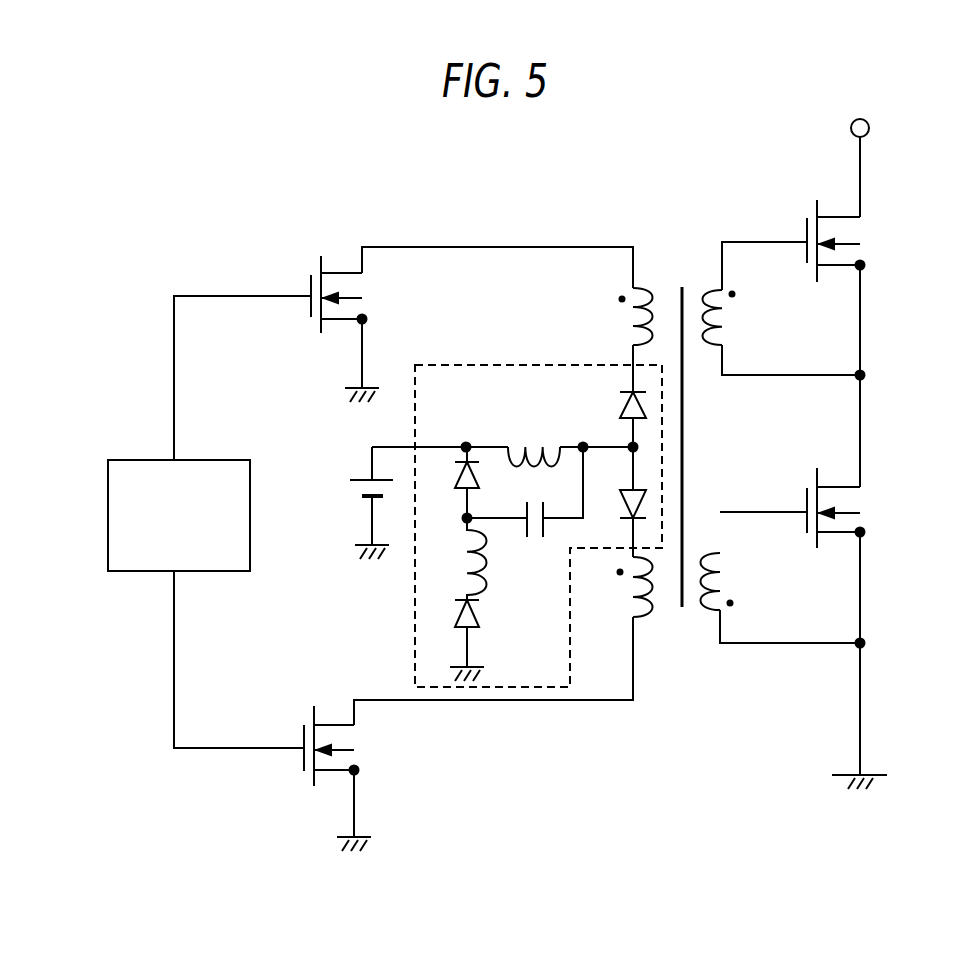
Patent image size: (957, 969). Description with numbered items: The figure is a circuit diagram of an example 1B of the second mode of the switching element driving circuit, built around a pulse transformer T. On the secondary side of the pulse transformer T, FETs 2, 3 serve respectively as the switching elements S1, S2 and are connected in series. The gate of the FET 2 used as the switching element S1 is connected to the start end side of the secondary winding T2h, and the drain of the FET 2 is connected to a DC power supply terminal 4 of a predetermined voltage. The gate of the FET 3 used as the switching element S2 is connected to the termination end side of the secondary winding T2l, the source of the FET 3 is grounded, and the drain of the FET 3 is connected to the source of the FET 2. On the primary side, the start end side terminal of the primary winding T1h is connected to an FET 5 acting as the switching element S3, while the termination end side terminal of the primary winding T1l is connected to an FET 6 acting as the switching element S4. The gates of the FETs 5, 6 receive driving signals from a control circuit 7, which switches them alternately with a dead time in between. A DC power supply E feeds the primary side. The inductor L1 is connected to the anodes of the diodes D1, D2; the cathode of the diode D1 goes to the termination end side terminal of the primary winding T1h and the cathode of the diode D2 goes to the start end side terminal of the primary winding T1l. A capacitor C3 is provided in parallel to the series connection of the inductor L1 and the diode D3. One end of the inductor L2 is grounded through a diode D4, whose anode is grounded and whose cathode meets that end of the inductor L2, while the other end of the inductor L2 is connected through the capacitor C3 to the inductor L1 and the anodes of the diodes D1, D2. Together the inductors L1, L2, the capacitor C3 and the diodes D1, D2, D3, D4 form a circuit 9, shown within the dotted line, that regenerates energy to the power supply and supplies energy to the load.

The switching element driving circuit example 1B is at (226, 230).
The FET 2 is at (805, 256).
The FET 3 is at (805, 500).
The DC power supply terminal 4 is at (869, 126).
The FET 5 is at (309, 308).
The FET 6 is at (301, 762).
The control circuit 7 is at (108, 478).
The circuit 9 is at (520, 363).
The pulse transformer T is at (684, 237).
The DC power supply E is at (361, 503).
The switching element S1 is at (825, 251).
The switching element S2 is at (822, 506).
The switching element S3 is at (304, 305).
The switching element S4 is at (297, 758).
The primary winding T1h is at (619, 316).
The primary winding T1l is at (625, 587).
The secondary winding T2h is at (736, 317).
The secondary winding T2l is at (730, 581).
The diode D1 is at (618, 396).
The diode D2 is at (619, 502).
The diode D3 is at (451, 482).
The diode D4 is at (451, 633).
The inductor L1 is at (534, 443).
The inductor L2 is at (462, 559).
The capacitor C3 is at (525, 505).